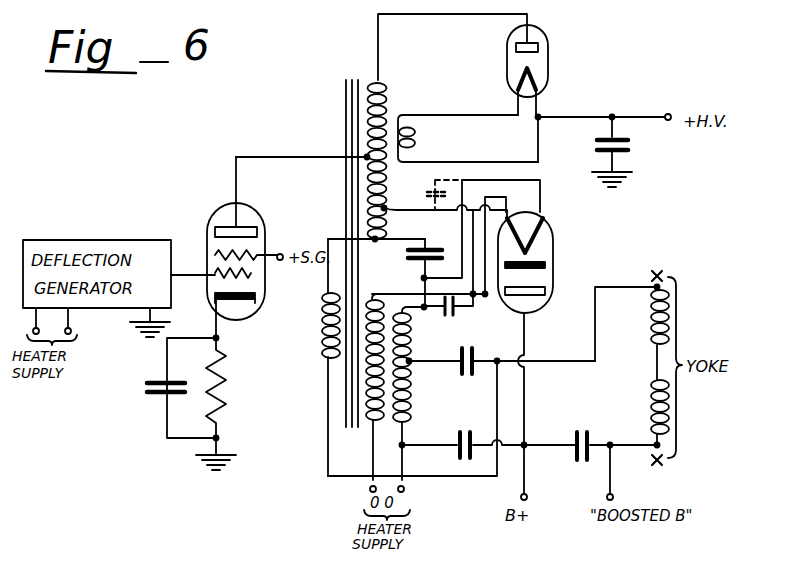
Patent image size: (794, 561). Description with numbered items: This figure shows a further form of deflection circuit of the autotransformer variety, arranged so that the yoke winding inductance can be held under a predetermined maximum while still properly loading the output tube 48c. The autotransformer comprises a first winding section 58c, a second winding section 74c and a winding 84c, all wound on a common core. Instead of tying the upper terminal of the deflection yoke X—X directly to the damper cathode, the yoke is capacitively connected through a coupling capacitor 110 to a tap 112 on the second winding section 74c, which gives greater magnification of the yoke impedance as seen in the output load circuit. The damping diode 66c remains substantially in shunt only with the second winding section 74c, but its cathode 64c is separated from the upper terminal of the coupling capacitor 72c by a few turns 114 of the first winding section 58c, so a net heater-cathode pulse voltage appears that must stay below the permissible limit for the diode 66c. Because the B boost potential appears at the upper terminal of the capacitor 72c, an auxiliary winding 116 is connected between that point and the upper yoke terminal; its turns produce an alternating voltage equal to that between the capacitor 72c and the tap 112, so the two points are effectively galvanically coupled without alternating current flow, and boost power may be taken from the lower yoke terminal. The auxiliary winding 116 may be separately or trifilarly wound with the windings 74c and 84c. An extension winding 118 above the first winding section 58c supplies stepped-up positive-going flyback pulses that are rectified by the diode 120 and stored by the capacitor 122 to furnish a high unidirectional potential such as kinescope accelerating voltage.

The output tube 48c is at (258, 221).
The extension winding 118 is at (386, 104).
The turns of the autotransformer first winding section 114 is at (386, 223).
The autotransformer first winding section 58c is at (384, 208).
The diode 120 is at (548, 48).
The capacitor 122 is at (628, 146).
The damper tube 66c is at (553, 236).
The cathode 64c is at (545, 265).
The coupling capacitor 72c is at (410, 258).
The auxiliary winding 116 is at (321, 323).
The winding 84c is at (372, 418).
The autotransformer second winding section 74c is at (411, 405).
The tap 112 is at (410, 359).
The coupling capacitor 110 is at (475, 351).